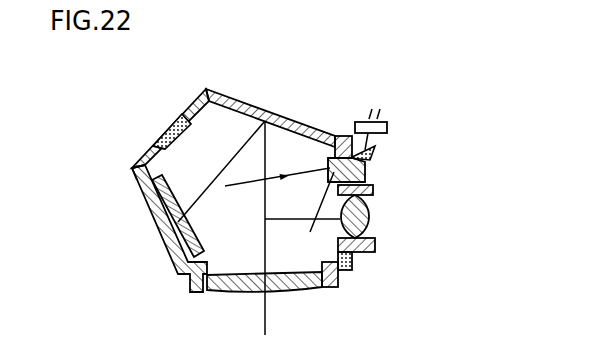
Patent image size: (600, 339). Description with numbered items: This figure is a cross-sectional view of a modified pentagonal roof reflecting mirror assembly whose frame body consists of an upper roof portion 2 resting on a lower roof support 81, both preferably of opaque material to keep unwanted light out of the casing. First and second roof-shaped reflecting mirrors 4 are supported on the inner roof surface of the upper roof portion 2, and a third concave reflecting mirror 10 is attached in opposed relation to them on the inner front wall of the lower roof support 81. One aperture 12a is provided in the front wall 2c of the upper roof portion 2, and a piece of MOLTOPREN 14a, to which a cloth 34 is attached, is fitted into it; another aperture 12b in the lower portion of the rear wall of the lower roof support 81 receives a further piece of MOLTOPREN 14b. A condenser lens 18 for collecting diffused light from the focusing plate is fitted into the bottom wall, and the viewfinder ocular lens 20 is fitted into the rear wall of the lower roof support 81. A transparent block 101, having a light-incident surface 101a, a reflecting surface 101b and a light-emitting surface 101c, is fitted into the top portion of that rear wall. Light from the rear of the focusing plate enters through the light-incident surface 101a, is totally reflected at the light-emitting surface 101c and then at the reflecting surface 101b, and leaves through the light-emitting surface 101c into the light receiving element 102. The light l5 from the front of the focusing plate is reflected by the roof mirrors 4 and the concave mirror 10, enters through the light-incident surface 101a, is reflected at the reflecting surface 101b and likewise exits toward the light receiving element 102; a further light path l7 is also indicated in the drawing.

The upper roof portion 2 is at (253, 105).
The front wall 2c is at (139, 163).
The cloth 34 is at (176, 115).
The MOLTOPREN 14a is at (179, 131).
The aperture 12a is at (160, 155).
The third concave reflecting mirror 10 is at (178, 221).
The lower roof support 81 is at (152, 227).
The condenser lens 18 is at (238, 284).
The aperture 12b is at (345, 273).
The MOLTOPREN 14b is at (353, 257).
The viewfinder ocular lens 20 is at (371, 208).
The transparent block 101 is at (340, 137).
The light-incident surface 101a is at (332, 177).
The reflecting surface 101b is at (367, 171).
The light-emitting surface 101c is at (378, 152).
The light receiving element 102 is at (381, 123).
The first and second reflecting mirrors 4 is at (280, 130).
The light l5 is at (250, 184).
The optical path l7 is at (310, 228).